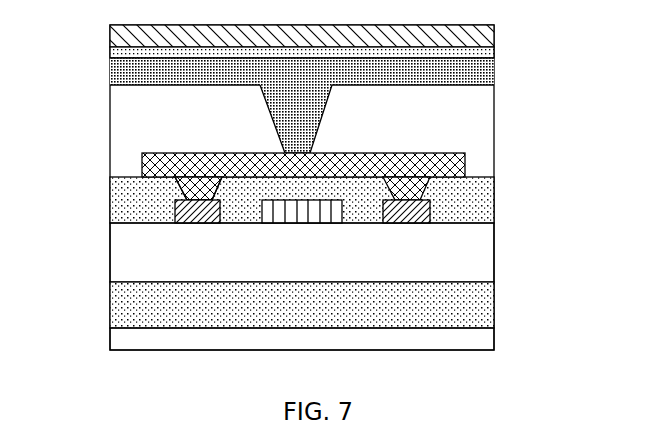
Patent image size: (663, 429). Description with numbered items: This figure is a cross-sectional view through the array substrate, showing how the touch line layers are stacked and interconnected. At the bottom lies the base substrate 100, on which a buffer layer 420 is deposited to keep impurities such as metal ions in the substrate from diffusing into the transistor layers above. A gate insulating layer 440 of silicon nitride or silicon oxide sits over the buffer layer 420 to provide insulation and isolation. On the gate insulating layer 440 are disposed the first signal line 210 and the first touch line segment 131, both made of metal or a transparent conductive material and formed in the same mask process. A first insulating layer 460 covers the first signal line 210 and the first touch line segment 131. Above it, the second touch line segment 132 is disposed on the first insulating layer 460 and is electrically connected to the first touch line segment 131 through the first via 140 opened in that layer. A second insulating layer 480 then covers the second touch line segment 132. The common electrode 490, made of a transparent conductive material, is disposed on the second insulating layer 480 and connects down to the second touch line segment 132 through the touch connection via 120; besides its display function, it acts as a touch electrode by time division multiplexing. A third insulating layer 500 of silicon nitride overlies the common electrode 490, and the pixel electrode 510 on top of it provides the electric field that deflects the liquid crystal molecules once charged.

The base substrate 100 is at (463, 338).
The buffer layer 420 is at (463, 300).
The gate insulating layer 440 is at (463, 264).
The first insulating layer 460 is at (133, 208).
The first touch line segment 131 is at (407, 212).
The first signal line 210 is at (438, 226).
The first via 140 is at (188, 188).
The second touch line segment 132 is at (443, 165).
The second insulating layer 480 is at (457, 125).
The touch connection via 120 is at (285, 118).
The common electrode 490 is at (455, 75).
The third insulating layer 500 is at (452, 55).
The pixel electrode 510 is at (457, 30).